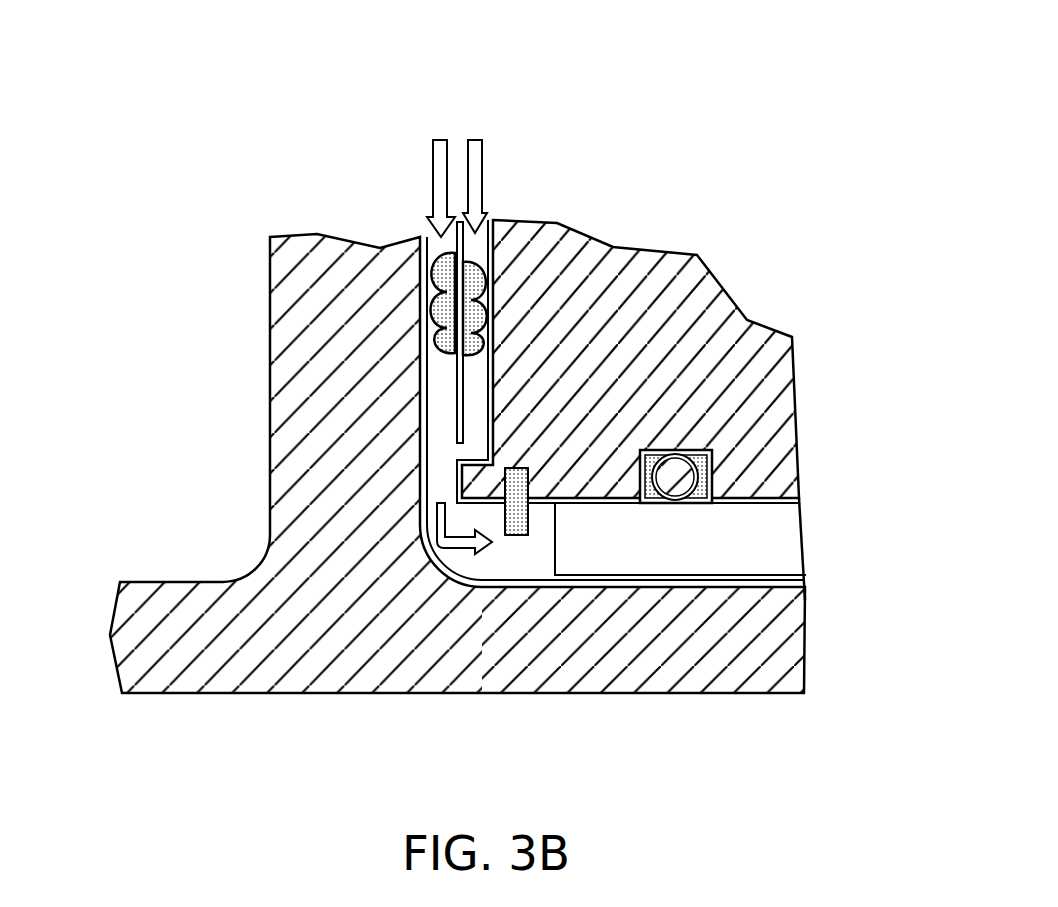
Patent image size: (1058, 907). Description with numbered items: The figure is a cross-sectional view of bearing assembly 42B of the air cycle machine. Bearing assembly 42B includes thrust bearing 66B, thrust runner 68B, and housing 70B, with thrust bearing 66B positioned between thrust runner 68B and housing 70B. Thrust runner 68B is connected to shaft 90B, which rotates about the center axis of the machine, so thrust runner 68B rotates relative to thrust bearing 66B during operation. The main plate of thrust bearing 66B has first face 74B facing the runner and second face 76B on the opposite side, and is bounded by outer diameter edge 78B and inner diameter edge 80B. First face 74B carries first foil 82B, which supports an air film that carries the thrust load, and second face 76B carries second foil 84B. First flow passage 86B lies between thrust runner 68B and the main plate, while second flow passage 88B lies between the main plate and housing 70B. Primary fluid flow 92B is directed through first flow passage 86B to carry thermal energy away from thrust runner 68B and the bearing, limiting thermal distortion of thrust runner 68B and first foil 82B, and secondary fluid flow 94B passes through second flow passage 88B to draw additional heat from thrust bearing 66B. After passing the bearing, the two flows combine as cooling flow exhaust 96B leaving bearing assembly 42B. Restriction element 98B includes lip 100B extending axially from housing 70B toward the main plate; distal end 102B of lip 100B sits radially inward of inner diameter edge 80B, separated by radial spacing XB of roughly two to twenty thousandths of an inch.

The bearing assembly 42B is at (162, 72).
The thrust bearing 66B is at (458, 185).
The thrust runner 68B is at (270, 258).
The housing 70B is at (793, 355).
The first face 74B is at (440, 377).
The second face 76B is at (480, 277).
The outer diameter edge 78B is at (452, 243).
The inner diameter edge 80B is at (457, 441).
The first foil 82B is at (432, 302).
The second foil 84B is at (472, 331).
The first flow passage 86B is at (440, 488).
The second flow passage 88B is at (480, 449).
The shaft 90B is at (678, 697).
The primary fluid flow 92B is at (427, 180).
The secondary fluid flow 94B is at (483, 178).
The cooling flow exhaust 96B is at (462, 548).
The restriction element 98B is at (494, 503).
The lip 100B is at (443, 455).
The distal end 102B is at (495, 524).
The spacing XB is at (474, 415).